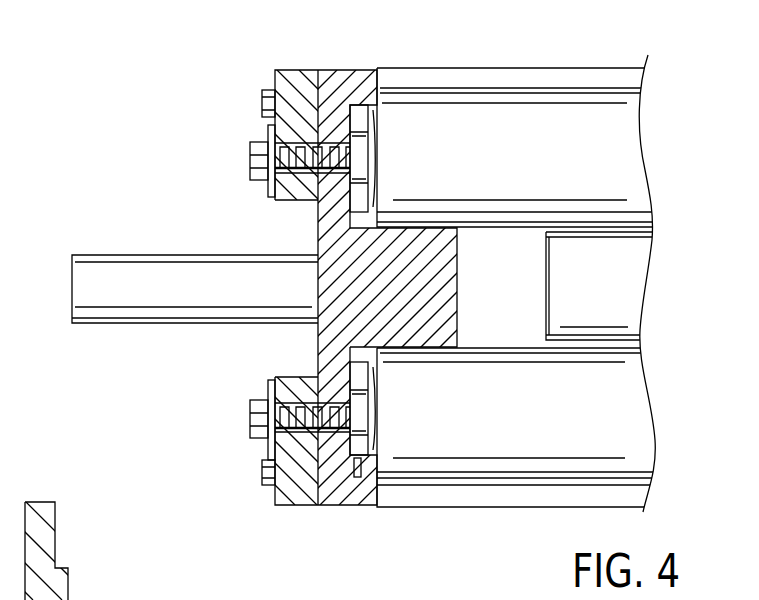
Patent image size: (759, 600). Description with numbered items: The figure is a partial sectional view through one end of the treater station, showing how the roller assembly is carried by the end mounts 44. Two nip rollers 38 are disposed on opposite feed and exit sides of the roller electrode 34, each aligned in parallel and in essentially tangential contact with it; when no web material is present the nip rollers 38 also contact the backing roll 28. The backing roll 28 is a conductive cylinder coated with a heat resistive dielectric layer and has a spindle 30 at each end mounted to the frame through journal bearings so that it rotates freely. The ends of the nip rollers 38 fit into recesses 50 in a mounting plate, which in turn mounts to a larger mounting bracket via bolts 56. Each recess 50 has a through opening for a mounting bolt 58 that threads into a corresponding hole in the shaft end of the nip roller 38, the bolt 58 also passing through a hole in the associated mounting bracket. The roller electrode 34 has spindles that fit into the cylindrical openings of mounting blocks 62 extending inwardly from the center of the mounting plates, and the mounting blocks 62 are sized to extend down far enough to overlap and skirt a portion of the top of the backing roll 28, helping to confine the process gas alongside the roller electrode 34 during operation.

The backing roll 28 is at (590, 66).
The spindle 30 is at (82, 288).
The roller electrode 34 is at (633, 263).
The nip rollers 38 is at (631, 135).
The end mounts 44 is at (304, 509).
The recesses 50 is at (363, 101).
The bolts 56 is at (262, 104).
The mounting bolt 58 is at (252, 158).
The mounting blocks 62 is at (450, 299).